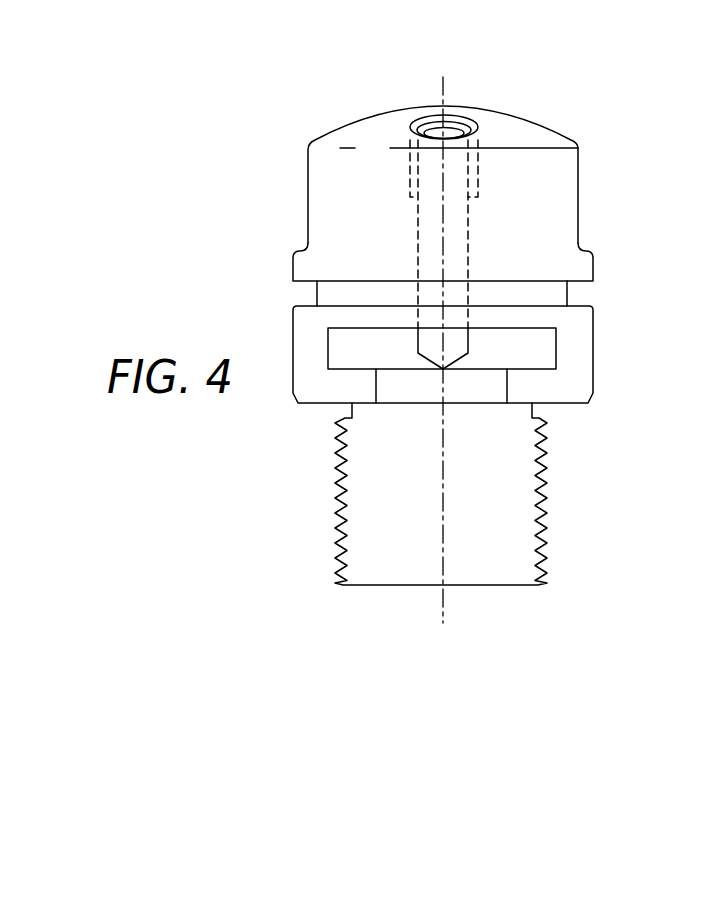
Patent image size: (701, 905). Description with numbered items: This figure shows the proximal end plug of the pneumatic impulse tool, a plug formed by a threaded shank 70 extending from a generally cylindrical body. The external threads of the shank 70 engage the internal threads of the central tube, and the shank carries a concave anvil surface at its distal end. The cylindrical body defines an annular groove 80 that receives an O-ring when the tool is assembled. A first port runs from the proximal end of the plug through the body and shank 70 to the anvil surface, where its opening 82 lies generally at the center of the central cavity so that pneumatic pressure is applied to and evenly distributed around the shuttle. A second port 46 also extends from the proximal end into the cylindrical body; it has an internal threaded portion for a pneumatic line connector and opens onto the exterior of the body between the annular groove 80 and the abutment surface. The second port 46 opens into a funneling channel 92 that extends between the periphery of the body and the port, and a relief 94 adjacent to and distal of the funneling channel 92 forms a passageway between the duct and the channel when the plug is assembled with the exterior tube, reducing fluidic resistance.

The opening 82 is at (453, 137).
The second port 46 is at (458, 233).
The annular groove 80 is at (568, 293).
The funneling channel 92 is at (543, 347).
The relief 94 is at (463, 397).
The shank 70 is at (485, 515).